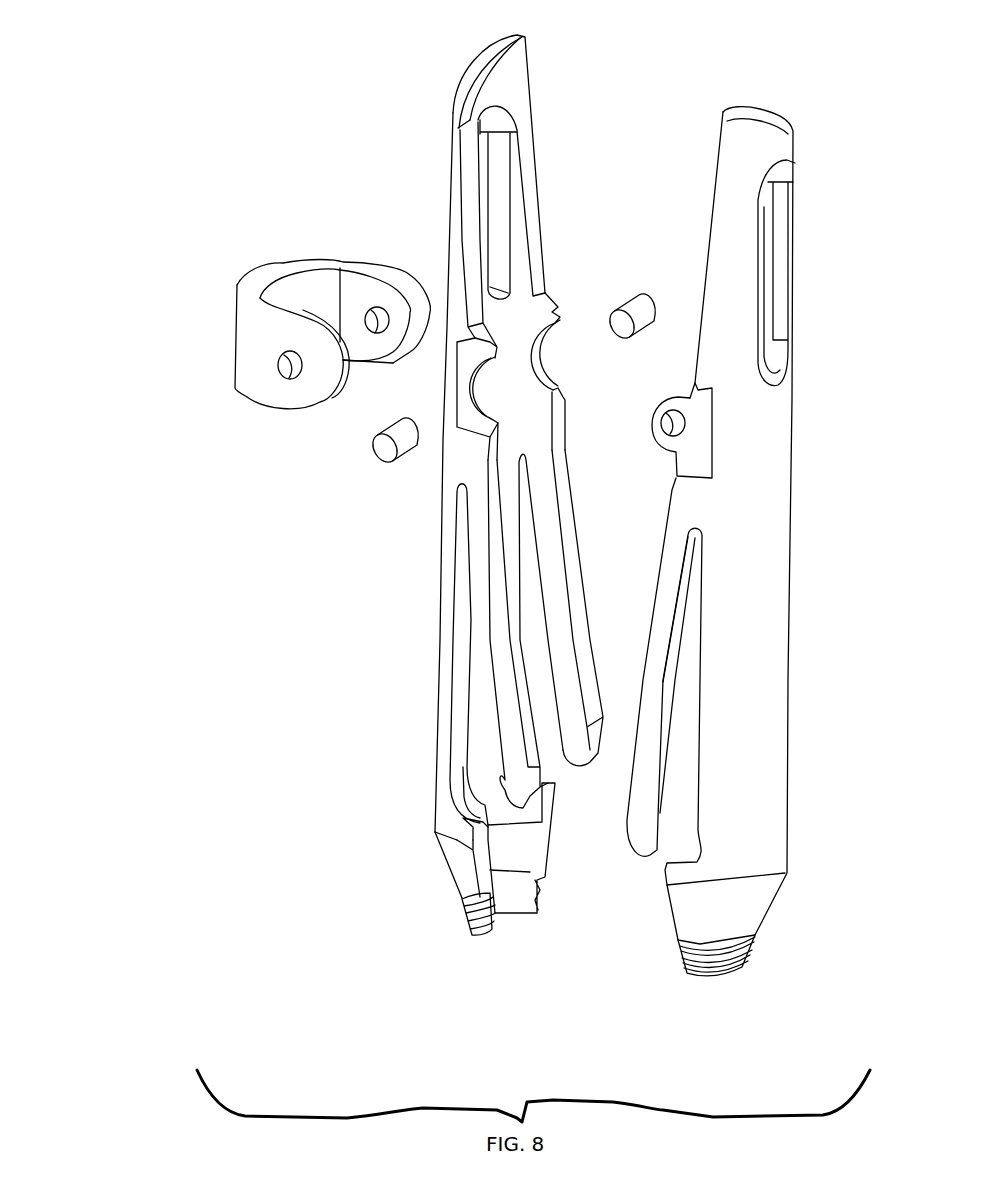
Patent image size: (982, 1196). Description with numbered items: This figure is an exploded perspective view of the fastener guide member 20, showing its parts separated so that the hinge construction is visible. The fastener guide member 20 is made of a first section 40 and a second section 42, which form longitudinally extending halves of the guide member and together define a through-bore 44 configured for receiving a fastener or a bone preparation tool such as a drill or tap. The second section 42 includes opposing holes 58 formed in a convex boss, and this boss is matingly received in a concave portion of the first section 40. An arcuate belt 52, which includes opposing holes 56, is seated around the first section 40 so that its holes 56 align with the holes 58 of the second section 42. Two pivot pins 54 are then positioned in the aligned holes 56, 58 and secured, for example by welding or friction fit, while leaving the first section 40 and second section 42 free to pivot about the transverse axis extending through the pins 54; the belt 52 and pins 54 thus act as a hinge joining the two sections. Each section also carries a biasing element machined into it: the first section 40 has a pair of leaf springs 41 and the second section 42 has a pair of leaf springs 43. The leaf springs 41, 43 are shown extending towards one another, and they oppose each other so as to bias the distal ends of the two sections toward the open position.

The fastener guide member 20 is at (100, 128).
The first section 40 is at (437, 202).
The leaf springs 41 is at (520, 676).
The second section 42 is at (781, 612).
The leaf springs 43 is at (658, 702).
The through-bore 44 is at (476, 729).
The belt 52 is at (238, 317).
The pivot pins 54 is at (387, 450).
The holes 56 is at (280, 372).
The holes 58 is at (687, 424).